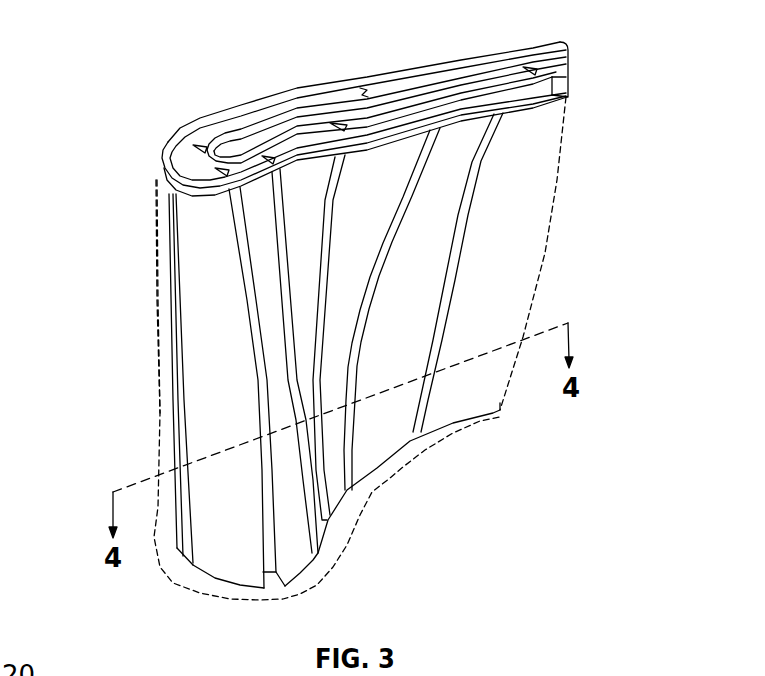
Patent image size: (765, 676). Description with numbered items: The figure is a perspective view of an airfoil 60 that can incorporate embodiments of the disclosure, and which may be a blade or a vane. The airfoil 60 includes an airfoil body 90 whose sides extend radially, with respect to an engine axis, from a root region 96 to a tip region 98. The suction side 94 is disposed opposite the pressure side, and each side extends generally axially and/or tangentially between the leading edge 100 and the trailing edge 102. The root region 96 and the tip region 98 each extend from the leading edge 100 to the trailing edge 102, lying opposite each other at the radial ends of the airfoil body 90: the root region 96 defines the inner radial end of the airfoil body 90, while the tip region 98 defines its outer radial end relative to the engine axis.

The airfoil 60 is at (140, 348).
The airfoil body 90 is at (363, 567).
The suction side 94 is at (300, 90).
The root region 96 is at (427, 452).
The tip region 98 is at (430, 57).
The leading edge 100 is at (120, 316).
The trailing edge 102 is at (564, 253).